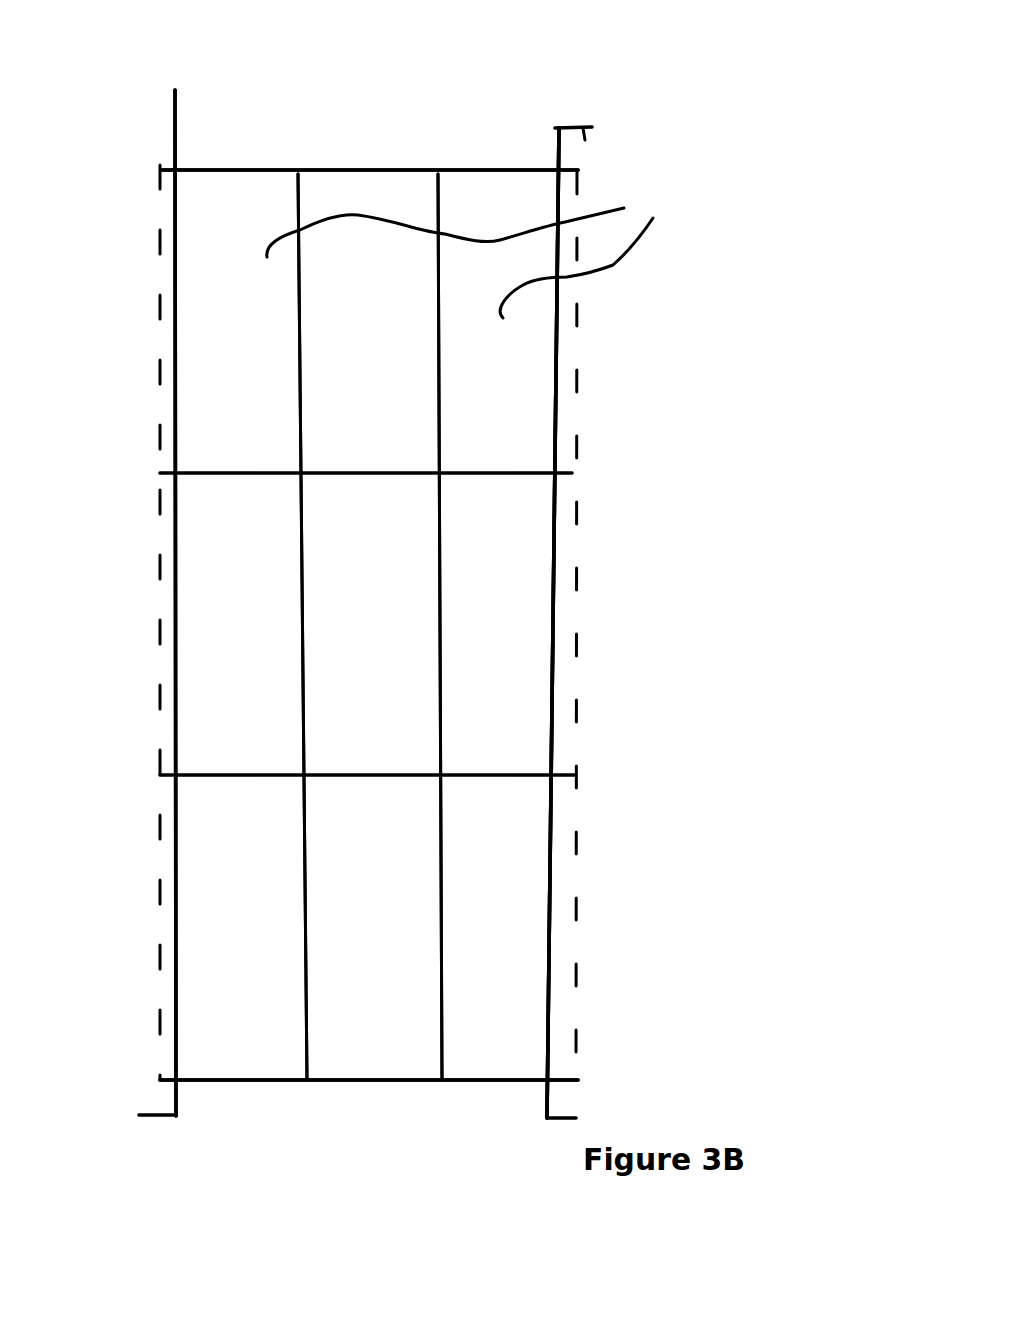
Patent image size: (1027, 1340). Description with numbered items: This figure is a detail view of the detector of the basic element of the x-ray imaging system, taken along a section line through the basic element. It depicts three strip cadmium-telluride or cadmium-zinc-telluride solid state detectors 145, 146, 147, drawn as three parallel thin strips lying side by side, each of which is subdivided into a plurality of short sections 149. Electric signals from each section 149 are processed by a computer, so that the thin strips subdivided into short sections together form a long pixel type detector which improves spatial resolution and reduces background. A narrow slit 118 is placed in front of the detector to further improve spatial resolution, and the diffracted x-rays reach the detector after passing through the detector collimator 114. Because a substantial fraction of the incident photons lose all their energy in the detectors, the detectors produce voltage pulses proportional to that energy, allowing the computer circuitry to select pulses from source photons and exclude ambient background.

The narrow slit 118 is at (154, 98).
The detector collimator 114 is at (385, 518).
The section 149 is at (655, 285).
The strip CT or CZT detector 145 is at (230, 1080).
The strip CT or CZT detector 146 is at (372, 1080).
The strip CT or CZT detector 147 is at (498, 1080).